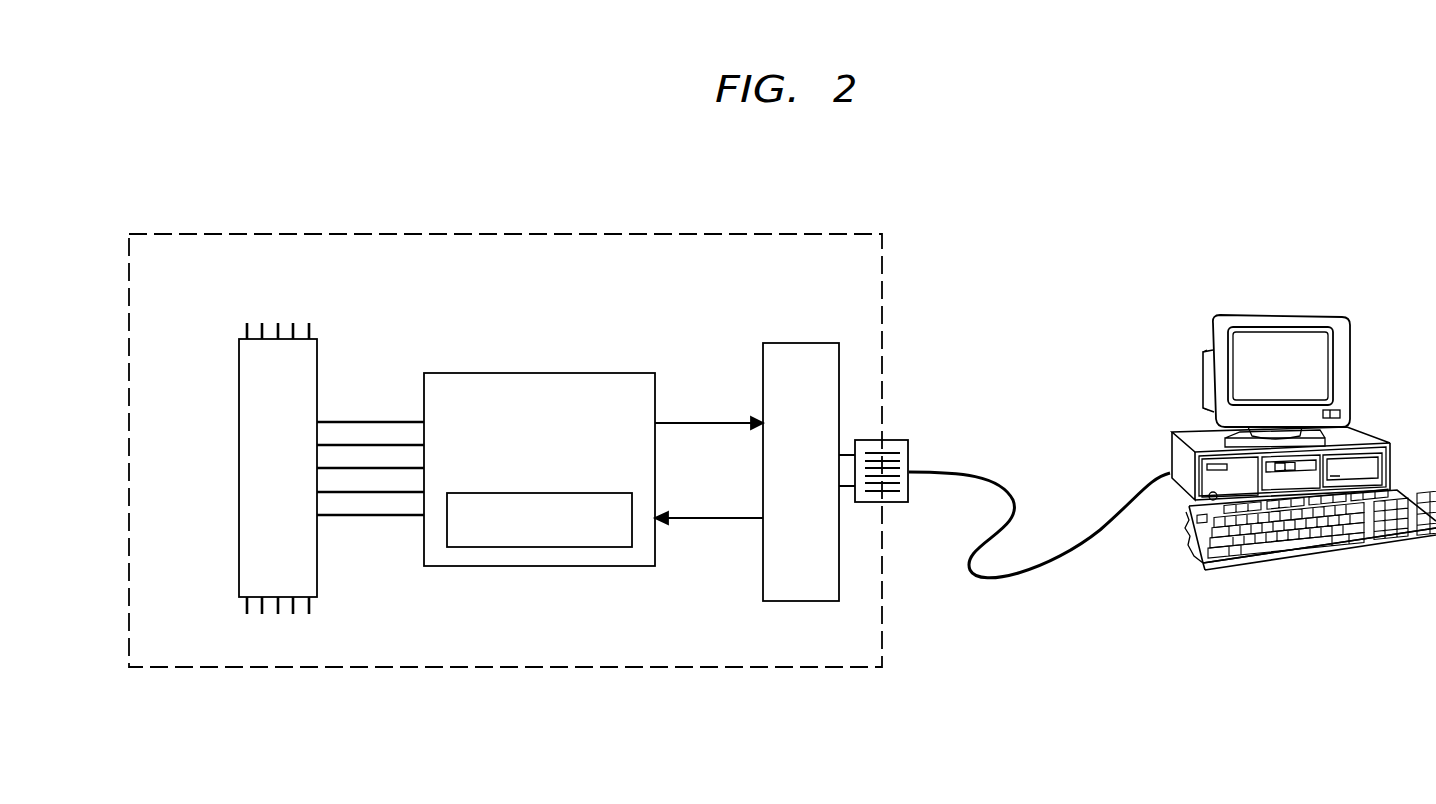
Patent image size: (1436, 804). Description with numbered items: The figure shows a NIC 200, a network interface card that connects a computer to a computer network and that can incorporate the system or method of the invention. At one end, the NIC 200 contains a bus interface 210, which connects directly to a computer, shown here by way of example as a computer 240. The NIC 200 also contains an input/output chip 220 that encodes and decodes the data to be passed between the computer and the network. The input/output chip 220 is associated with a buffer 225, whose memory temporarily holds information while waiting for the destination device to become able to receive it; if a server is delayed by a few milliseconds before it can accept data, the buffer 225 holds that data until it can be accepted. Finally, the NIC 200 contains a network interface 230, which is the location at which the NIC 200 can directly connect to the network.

The NIC 200 is at (515, 235).
The bus interface 210 is at (239, 467).
The input/output chip 220 is at (538, 372).
The buffer 225 is at (540, 548).
The network interface 230 is at (800, 343).
The computer 240 is at (1203, 381).